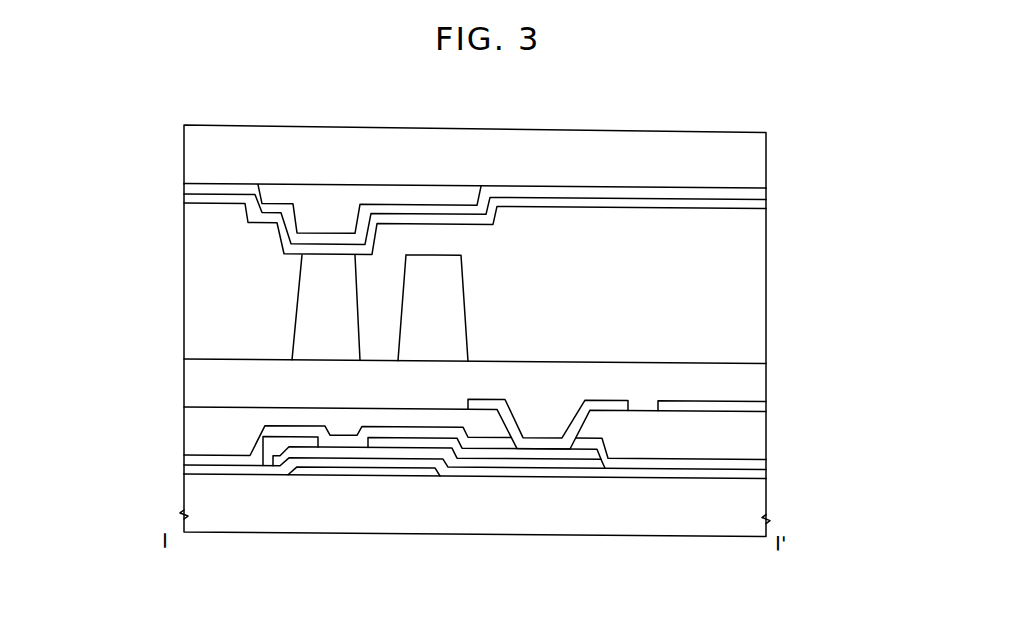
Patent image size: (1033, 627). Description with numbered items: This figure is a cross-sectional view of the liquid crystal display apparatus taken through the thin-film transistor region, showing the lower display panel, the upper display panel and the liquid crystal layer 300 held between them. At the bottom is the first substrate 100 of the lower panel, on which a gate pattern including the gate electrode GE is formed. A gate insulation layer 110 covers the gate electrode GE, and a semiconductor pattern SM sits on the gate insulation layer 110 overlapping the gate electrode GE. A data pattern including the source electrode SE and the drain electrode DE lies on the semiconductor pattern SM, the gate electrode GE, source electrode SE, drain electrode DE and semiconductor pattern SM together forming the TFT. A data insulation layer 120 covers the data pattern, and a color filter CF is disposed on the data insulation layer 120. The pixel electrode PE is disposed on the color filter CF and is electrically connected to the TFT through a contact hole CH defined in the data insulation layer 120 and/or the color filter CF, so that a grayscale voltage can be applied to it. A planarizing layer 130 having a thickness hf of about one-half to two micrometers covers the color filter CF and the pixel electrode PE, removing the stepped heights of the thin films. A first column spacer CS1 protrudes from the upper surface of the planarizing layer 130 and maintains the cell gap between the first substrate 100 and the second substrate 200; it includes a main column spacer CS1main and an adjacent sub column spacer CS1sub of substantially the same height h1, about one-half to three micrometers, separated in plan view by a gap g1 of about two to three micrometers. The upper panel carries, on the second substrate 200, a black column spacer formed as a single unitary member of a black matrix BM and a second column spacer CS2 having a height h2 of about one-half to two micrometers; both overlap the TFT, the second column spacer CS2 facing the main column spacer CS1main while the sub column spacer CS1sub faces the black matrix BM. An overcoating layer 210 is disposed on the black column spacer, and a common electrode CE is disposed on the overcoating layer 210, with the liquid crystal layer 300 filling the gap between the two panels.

The second substrate 200 is at (763, 155).
The overcoating layer 210 is at (763, 191).
The common electrode CE is at (763, 202).
The black matrix BM is at (439, 196).
The second column spacer CS2 is at (307, 216).
The first column spacer CS1 is at (68, 259).
The sub column spacer CS1sub is at (422, 280).
The main column spacer CS1main is at (305, 332).
The liquid crystal layer 300 is at (763, 292).
The planarizing layer 130 is at (763, 378).
The color filter CF is at (758, 433).
The pixel electrode PE is at (557, 443).
The contact hole CH is at (543, 425).
The data insulation layer 120 is at (758, 462).
The gate insulation layer 110 is at (758, 470).
The first substrate 100 is at (758, 503).
The gate electrode GE is at (342, 471).
The semiconductor pattern SM is at (394, 452).
The source electrode SE is at (298, 437).
The drain electrode DE is at (431, 439).
The height of the first column spacer h1 is at (327, 357).
The height of the second column spacer h2 is at (327, 205).
The thickness of the planarizing layer hf is at (227, 361).
The gap between the main and sub column spacers g1 is at (398, 367).